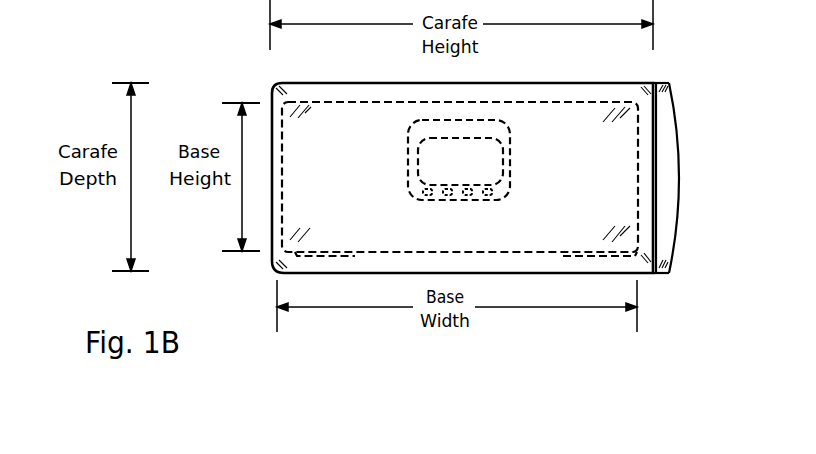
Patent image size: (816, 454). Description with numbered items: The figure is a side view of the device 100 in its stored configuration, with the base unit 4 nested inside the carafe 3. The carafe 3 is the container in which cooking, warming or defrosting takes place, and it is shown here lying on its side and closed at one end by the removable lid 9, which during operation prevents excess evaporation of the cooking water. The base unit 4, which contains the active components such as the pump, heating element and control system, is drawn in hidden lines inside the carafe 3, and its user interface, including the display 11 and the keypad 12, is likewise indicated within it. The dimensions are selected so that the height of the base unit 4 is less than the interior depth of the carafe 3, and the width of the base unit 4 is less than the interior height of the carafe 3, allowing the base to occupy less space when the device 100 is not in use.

The device 100 is at (252, 64).
The carafe 3 is at (611, 86).
The base unit 4 is at (355, 132).
The removable lid 9 is at (668, 103).
The display 11 is at (498, 165).
The keypad 12 is at (453, 193).